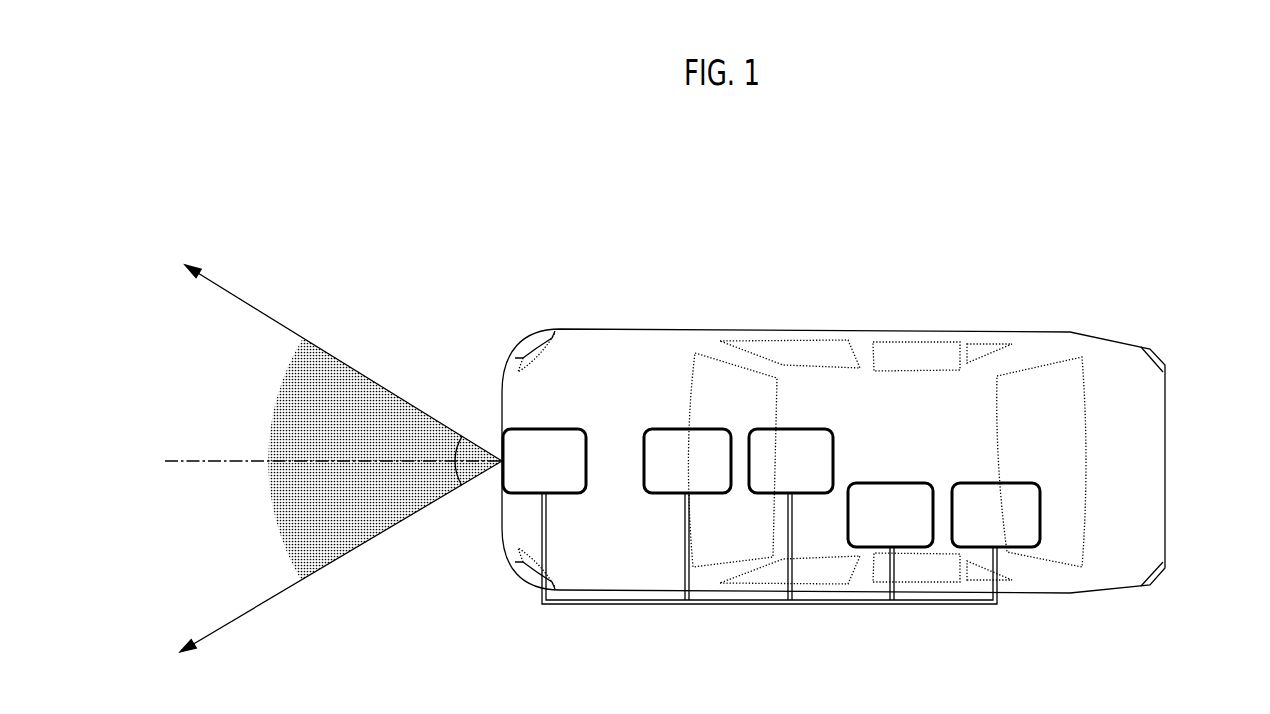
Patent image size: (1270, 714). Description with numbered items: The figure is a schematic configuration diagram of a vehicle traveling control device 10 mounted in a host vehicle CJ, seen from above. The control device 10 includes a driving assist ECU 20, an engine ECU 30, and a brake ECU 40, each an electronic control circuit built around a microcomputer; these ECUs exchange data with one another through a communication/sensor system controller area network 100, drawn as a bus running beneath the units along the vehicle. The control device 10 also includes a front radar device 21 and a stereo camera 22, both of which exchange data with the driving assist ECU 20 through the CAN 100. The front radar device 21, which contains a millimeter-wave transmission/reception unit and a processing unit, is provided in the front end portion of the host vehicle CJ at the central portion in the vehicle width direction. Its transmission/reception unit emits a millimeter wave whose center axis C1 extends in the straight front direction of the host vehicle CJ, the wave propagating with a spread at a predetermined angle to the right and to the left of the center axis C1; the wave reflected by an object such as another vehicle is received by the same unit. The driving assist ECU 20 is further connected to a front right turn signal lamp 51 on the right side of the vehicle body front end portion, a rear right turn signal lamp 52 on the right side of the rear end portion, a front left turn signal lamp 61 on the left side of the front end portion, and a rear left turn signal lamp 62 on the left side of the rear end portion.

The vehicle traveling control device 10 is at (905, 423).
The driving assist ECU 20 is at (701, 428).
The front radar device 21 is at (565, 428).
The stereo camera 22 is at (814, 428).
The engine ECU 30 is at (897, 482).
The brake ECU 40 is at (1012, 482).
The front right turn signal lamp 51 is at (529, 330).
The rear right turn signal lamp 52 is at (1156, 351).
The front left turn signal lamp 61 is at (520, 582).
The rear left turn signal lamp 62 is at (1156, 583).
The communication/sensor system controller area network (CAN) 100 is at (733, 606).
The center axis C1 is at (193, 458).
The host vehicle CJ is at (908, 330).